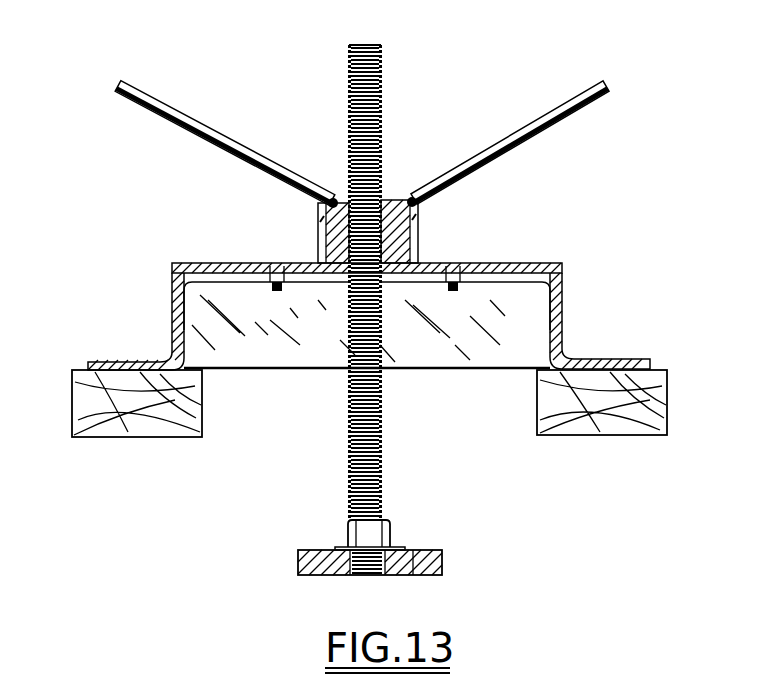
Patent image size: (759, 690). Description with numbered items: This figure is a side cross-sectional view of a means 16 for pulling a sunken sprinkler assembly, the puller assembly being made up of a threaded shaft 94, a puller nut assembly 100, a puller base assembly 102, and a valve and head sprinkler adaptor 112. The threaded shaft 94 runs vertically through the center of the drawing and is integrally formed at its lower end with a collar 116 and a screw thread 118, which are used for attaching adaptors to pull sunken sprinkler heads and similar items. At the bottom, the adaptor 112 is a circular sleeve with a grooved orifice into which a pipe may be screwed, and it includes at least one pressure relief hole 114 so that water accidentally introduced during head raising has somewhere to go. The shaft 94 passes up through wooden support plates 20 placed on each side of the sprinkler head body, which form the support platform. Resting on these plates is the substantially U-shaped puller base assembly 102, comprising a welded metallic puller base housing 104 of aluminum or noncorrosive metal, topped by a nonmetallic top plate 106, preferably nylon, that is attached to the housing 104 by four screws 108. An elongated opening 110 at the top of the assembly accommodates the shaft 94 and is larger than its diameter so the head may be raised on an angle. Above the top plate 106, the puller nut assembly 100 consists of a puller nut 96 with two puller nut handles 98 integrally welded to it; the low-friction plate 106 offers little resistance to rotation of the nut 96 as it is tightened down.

The means for pulling the sprinkler assembly 16 is at (403, 64).
The wooden support plates 20 is at (72, 383).
The threaded shaft 94 is at (383, 124).
The puller nut 96 is at (418, 232).
The puller nut handles 98 is at (172, 102).
The puller nut assembly 100 is at (312, 228).
The puller base assembly 102 is at (572, 305).
The puller base housing 104 is at (172, 308).
The top plate 106 is at (515, 263).
The screws 108 is at (280, 292).
The elongated opening 110 is at (389, 280).
The valve and head sprinkler adaptor 112 is at (310, 550).
The pressure relief hole 114 is at (414, 577).
The collar 116 is at (392, 532).
The screw thread 118 is at (365, 577).